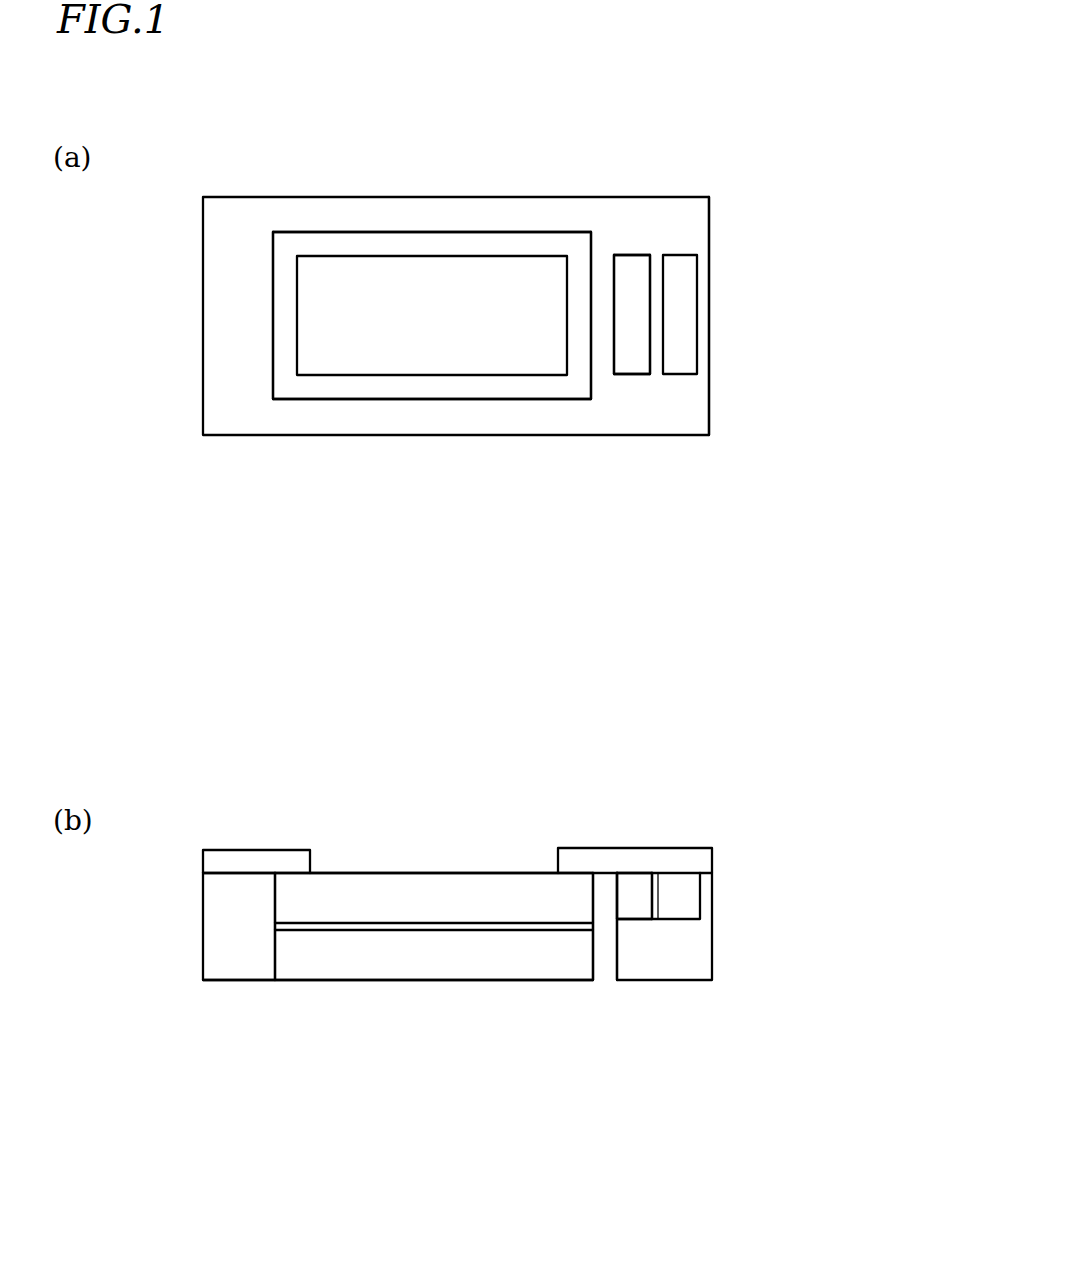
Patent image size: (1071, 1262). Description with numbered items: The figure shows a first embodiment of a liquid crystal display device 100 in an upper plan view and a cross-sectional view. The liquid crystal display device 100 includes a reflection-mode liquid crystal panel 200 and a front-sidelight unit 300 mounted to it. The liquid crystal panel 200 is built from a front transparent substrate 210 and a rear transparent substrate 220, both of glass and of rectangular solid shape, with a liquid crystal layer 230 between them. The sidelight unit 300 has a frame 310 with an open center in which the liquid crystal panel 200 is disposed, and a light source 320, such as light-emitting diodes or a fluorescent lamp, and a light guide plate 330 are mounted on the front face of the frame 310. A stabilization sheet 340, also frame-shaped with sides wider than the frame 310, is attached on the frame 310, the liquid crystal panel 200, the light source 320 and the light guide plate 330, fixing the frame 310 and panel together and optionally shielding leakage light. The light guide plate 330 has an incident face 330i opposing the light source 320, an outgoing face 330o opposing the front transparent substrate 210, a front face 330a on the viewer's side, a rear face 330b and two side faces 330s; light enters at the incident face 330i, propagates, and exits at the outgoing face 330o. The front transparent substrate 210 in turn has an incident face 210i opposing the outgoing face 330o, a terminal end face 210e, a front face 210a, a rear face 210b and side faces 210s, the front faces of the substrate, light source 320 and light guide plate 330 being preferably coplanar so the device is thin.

The liquid crystal display device 100 is at (767, 158).
The liquid crystal panel 200 is at (463, 208).
The front transparent substrate 210 is at (453, 897).
The front face 210a is at (360, 873).
The rear face 210b is at (458, 925).
The terminal end face 210e is at (273, 313).
The incident face 210i is at (593, 250).
The side faces 210s is at (358, 232).
The rear transparent substrate 220 is at (398, 955).
The liquid crystal layer 230 is at (318, 927).
The sidelight unit 300 is at (468, 548).
The frame 310 is at (490, 437).
The light source 320 is at (677, 362).
The light guide plate 330 is at (623, 363).
The front face 330a is at (628, 872).
The rear face 330b is at (628, 922).
The incident face 330i is at (652, 315).
The outgoing face 330o is at (614, 313).
The side faces 330s is at (627, 254).
The stabilization sheet 340 is at (700, 423).